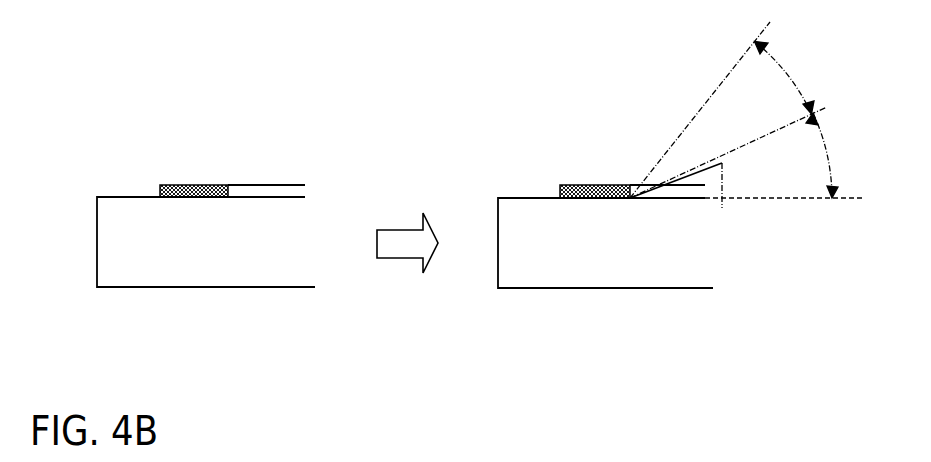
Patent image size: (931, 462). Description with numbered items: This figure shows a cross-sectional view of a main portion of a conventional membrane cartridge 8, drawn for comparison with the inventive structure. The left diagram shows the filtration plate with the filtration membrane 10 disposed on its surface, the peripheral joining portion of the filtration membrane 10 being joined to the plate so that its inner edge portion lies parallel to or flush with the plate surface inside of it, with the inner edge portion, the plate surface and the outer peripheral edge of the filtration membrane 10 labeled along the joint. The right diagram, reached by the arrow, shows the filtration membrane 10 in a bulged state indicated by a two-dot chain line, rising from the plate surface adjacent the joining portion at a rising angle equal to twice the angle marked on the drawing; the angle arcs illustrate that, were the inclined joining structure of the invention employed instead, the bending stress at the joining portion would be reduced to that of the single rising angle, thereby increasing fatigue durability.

The membrane cartridge 8 is at (211, 219).
The filtration membrane 10 is at (291, 188).